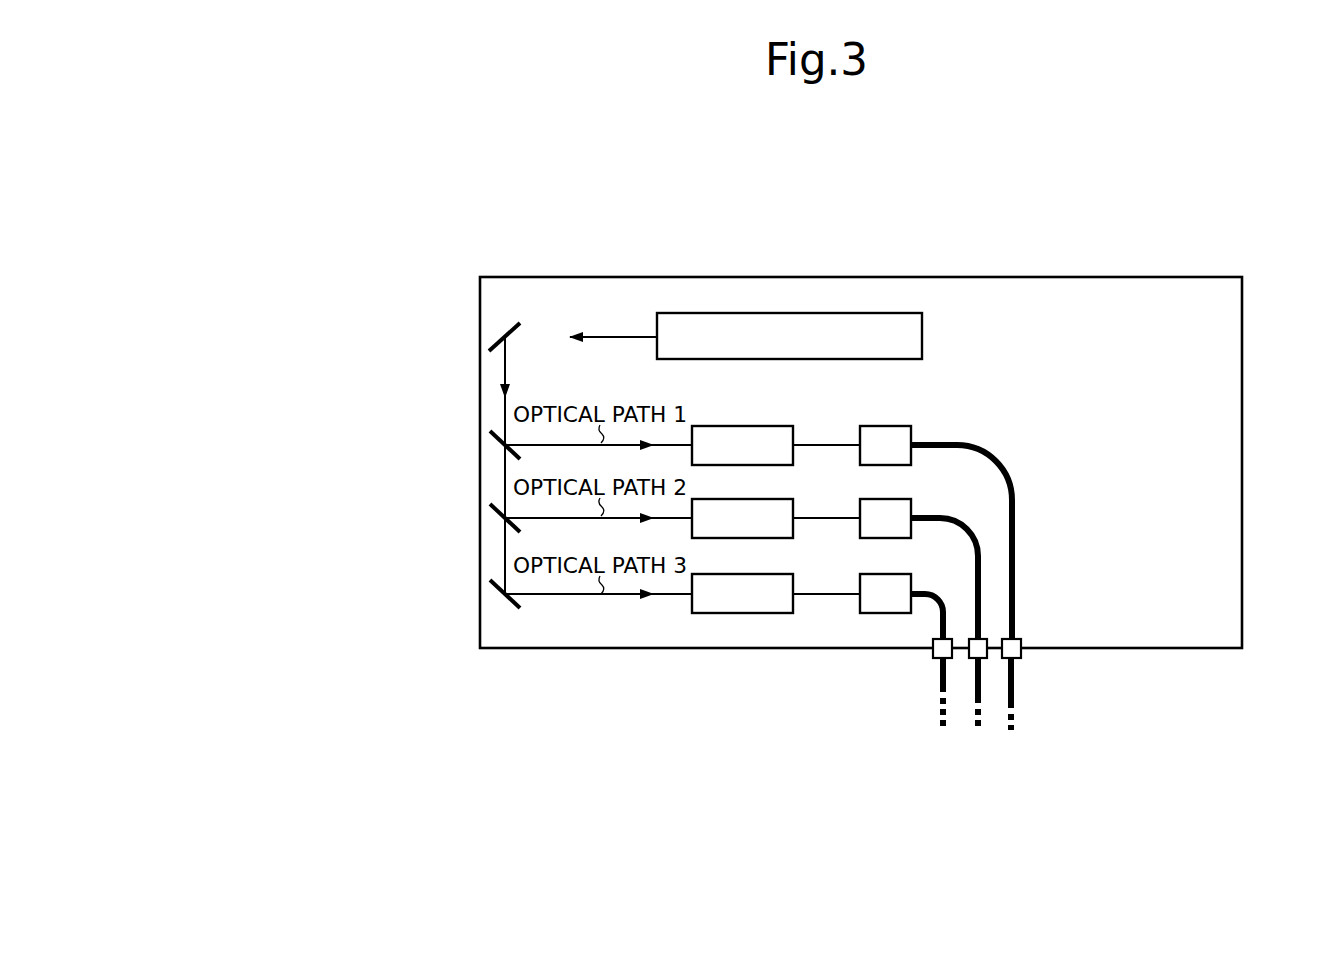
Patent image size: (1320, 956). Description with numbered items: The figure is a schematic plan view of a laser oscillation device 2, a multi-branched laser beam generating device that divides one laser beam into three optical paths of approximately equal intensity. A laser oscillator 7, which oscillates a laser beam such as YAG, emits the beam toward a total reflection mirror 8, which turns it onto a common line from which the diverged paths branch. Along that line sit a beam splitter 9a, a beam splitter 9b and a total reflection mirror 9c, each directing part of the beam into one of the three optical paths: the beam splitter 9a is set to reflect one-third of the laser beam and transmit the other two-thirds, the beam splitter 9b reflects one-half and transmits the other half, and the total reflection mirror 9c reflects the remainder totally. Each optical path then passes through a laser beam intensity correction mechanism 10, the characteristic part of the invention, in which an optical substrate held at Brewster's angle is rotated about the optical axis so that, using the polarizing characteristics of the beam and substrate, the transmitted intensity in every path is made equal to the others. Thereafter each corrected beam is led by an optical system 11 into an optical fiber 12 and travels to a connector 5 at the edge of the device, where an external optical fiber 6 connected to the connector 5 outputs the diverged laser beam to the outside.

The laser oscillation device 2 is at (724, 203).
The connector 5 is at (950, 658).
The optical fiber 6 is at (1010, 736).
The laser oscillator 7 is at (922, 337).
The total reflection mirror 8 is at (518, 322).
The beam splitter 9a is at (482, 440).
The beam splitter 9b is at (482, 512).
The total reflection mirror 9c is at (482, 590).
The laser beam intensity correction mechanism 10 is at (793, 585).
The optical system 11 is at (905, 588).
The optical fiber 12 is at (925, 600).